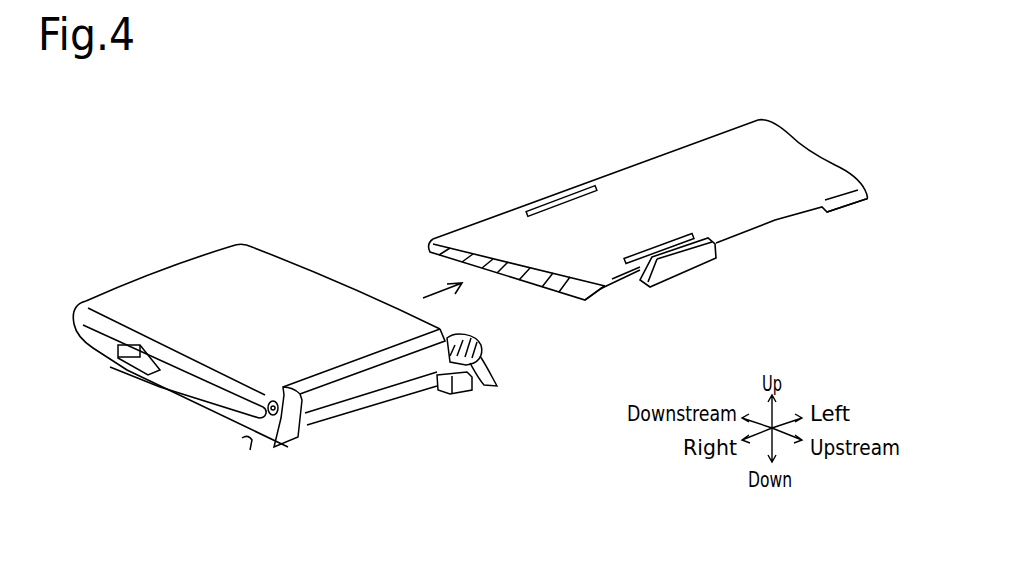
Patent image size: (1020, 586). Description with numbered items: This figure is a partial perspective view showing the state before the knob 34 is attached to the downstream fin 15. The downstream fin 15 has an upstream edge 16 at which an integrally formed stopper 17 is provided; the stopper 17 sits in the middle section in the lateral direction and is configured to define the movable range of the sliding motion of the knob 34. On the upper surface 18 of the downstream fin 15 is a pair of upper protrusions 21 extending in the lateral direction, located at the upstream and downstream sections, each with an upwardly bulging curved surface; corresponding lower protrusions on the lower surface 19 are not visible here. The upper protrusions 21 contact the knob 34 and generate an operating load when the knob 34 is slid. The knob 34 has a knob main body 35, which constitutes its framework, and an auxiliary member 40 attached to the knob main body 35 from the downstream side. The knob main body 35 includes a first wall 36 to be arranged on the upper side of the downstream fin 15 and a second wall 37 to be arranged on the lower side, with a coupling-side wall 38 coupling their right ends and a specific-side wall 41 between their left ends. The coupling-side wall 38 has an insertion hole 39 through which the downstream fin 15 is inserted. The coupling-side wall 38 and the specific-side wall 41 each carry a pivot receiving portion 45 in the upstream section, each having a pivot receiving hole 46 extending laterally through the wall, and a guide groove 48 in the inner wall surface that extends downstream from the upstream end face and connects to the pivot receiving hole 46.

The downstream fin 15 is at (606, 142).
The upstream edge 16 is at (846, 210).
The stopper 17 is at (680, 268).
The upper surface 18 is at (520, 263).
The lower surface 19 is at (537, 294).
The upper protrusions 21 is at (640, 253).
The knob 34 is at (148, 243).
The knob main body 35 is at (132, 288).
The first wall 36 is at (312, 272).
The second wall 37 is at (360, 388).
The coupling-side wall 38 is at (182, 360).
The insertion hole 39 is at (197, 398).
The auxiliary member 40 is at (80, 320).
The specific-side wall 41 is at (497, 387).
The pivot receiving portion 45 is at (273, 442).
The pivot receiving hole 46 is at (266, 432).
The guide groove 48 is at (307, 425).